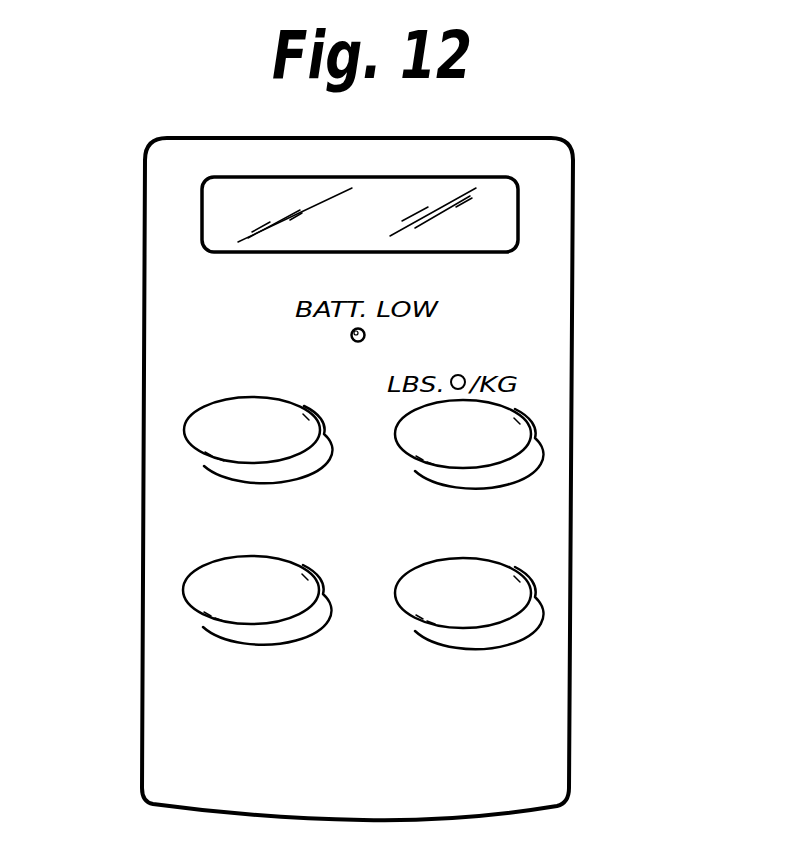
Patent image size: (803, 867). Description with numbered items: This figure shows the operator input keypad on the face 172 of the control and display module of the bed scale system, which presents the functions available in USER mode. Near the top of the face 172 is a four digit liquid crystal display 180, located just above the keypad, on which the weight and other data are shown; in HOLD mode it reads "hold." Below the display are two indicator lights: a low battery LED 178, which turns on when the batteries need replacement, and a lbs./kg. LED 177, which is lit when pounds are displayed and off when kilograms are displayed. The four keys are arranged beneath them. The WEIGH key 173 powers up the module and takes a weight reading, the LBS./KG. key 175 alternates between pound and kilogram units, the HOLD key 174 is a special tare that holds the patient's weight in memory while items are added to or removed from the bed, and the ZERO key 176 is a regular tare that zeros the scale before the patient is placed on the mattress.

The face 172 is at (593, 499).
The WEIGH key 173 is at (195, 428).
The HOLD key 174 is at (195, 585).
The LBS./KG. key 175 is at (525, 427).
The ZERO key 176 is at (518, 595).
The lbs./kg. light emitting diode 177 is at (462, 376).
The low battery LED 178 is at (366, 334).
The four digit liquid crystal display 180 is at (503, 217).